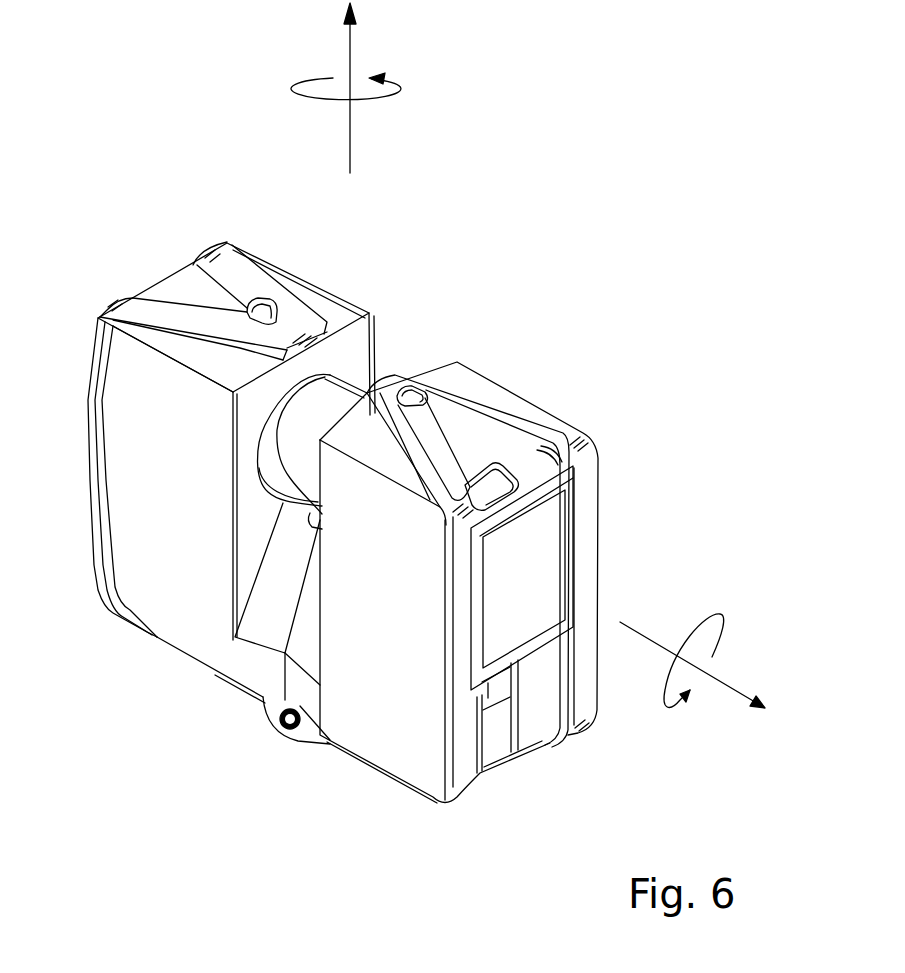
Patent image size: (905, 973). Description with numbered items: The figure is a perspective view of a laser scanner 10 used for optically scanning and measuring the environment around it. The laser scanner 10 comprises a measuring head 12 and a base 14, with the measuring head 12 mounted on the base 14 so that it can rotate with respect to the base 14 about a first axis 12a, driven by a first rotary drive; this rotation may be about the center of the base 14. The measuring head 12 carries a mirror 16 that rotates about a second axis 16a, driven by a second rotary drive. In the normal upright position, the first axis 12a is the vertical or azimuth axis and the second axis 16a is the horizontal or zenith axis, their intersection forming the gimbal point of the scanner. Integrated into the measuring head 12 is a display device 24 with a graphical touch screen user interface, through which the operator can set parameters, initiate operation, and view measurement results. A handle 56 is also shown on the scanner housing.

The laser scanner 10 is at (200, 110).
The measuring head 12 is at (618, 548).
The first axis 12a is at (352, 57).
The base 14 is at (297, 733).
The mirror 16 is at (335, 404).
The second axis 16a is at (740, 687).
The display device 24 is at (547, 523).
The handle 56 is at (145, 310).